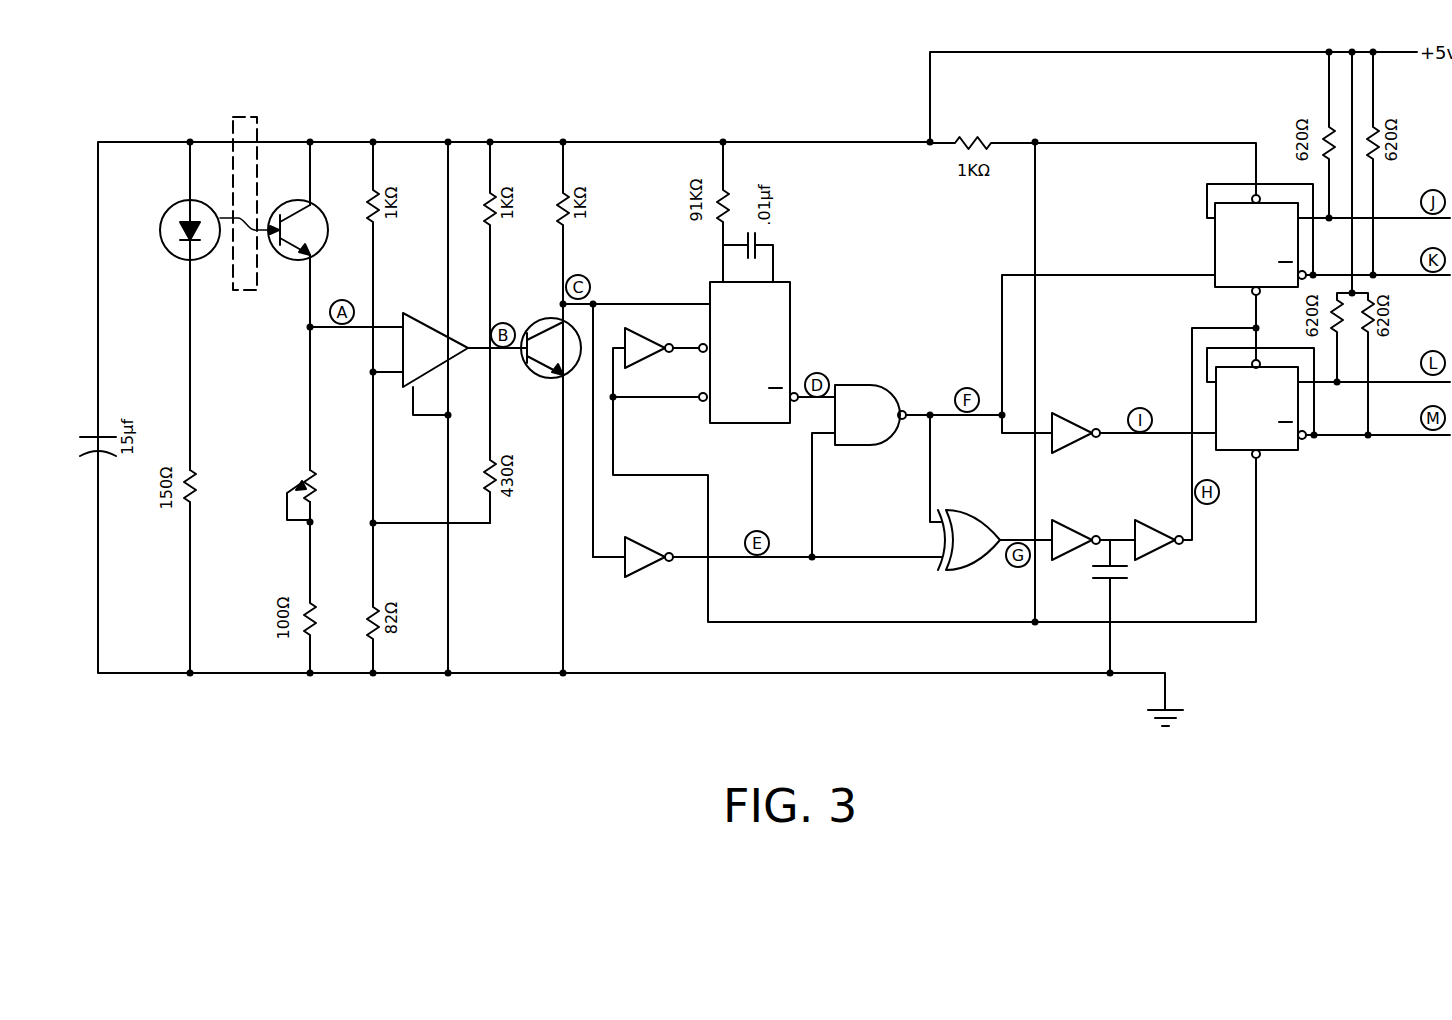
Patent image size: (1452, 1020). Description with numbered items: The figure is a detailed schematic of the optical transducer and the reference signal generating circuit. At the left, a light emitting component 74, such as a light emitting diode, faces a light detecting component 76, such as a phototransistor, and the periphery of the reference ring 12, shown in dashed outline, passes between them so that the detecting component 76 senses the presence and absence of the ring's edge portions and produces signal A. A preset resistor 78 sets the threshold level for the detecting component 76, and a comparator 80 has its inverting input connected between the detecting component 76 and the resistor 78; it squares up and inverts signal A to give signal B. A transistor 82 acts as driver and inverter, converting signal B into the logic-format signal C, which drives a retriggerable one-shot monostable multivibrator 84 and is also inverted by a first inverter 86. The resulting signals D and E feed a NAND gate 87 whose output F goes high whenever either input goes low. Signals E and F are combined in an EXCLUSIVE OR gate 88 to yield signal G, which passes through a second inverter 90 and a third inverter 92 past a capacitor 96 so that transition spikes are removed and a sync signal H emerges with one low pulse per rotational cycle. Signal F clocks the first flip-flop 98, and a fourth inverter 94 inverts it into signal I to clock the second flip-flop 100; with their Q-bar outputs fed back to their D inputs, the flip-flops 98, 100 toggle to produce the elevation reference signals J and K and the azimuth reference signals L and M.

The reference ring 12 is at (258, 130).
The light beam emitting component 74 is at (178, 260).
The light beam detecting component 76 is at (294, 260).
The resistor 78 is at (305, 481).
The comparator 80 is at (430, 318).
The transistor 82 is at (540, 378).
The retriggerable one-shot monostable multivibrator 84 is at (792, 298).
The first inverter 86 is at (647, 574).
The NAND gate 87 is at (873, 446).
The EXCLUSIVE OR gate 88 is at (960, 569).
The second inverter 90 is at (1068, 558).
The third inverter 92 is at (1163, 547).
The fourth inverter 94 is at (1074, 415).
The capacitor 96 is at (1117, 580).
The first flip-flop 98 is at (1214, 252).
The second flip-flop 100 is at (1285, 455).